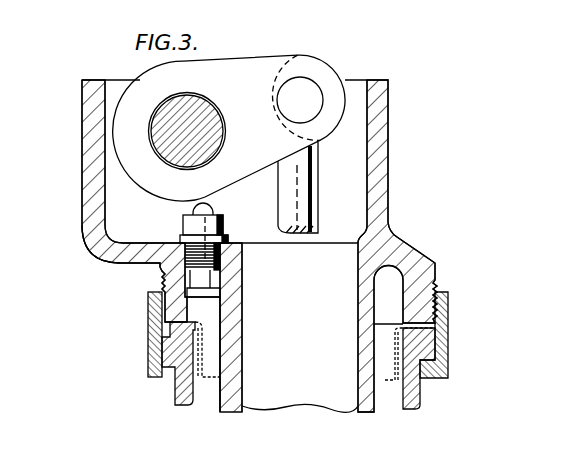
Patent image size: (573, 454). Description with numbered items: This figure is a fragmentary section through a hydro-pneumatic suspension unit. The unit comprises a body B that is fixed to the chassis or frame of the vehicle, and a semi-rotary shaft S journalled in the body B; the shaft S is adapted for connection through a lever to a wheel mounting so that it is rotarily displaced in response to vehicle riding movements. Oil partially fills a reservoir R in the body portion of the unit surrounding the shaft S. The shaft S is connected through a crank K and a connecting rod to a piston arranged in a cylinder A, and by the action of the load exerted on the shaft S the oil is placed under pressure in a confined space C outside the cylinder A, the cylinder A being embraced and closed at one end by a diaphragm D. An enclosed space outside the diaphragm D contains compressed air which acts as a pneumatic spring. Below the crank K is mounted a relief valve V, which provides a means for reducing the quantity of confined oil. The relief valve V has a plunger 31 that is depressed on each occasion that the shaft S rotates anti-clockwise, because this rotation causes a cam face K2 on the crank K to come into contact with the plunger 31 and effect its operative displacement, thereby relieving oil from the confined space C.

The semi-rotary shaft S is at (160, 140).
The crank K is at (268, 158).
The cam face K2 is at (200, 204).
The plunger 31 is at (212, 209).
The relief valve V is at (222, 262).
The reservoir R is at (118, 231).
The body B is at (100, 256).
The cylinder A is at (368, 407).
The confined space C is at (210, 368).
The diaphragm D is at (200, 380).